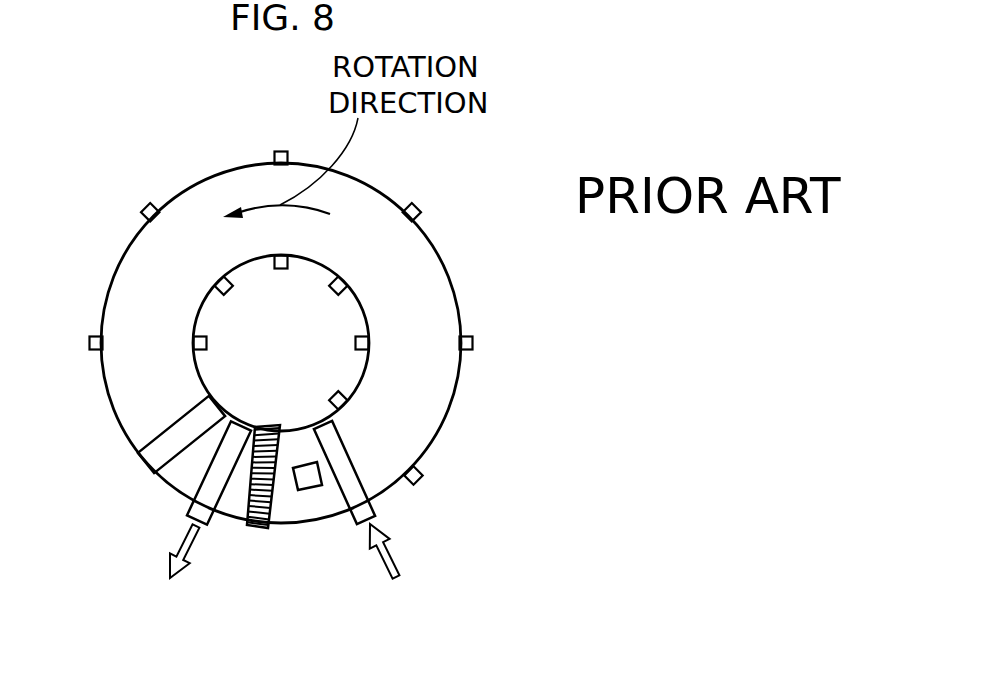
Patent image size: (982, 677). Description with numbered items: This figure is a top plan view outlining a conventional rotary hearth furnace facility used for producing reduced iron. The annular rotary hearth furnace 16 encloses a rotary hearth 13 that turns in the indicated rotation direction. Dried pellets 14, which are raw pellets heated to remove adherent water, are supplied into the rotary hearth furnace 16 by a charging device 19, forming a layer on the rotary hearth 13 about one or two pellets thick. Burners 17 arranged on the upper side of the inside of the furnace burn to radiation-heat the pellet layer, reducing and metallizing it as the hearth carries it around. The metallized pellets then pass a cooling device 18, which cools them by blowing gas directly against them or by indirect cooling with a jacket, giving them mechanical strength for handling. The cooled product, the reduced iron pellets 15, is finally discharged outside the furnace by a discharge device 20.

The rotary hearth 13 is at (297, 507).
The dried pellets 14 is at (394, 570).
The reduced iron pellets 15 is at (174, 569).
The rotary hearth furnace 16 is at (451, 283).
The burner 17 is at (475, 345).
The cooling device 18 is at (152, 466).
The charging device 19 is at (368, 512).
The discharge device 20 is at (207, 489).